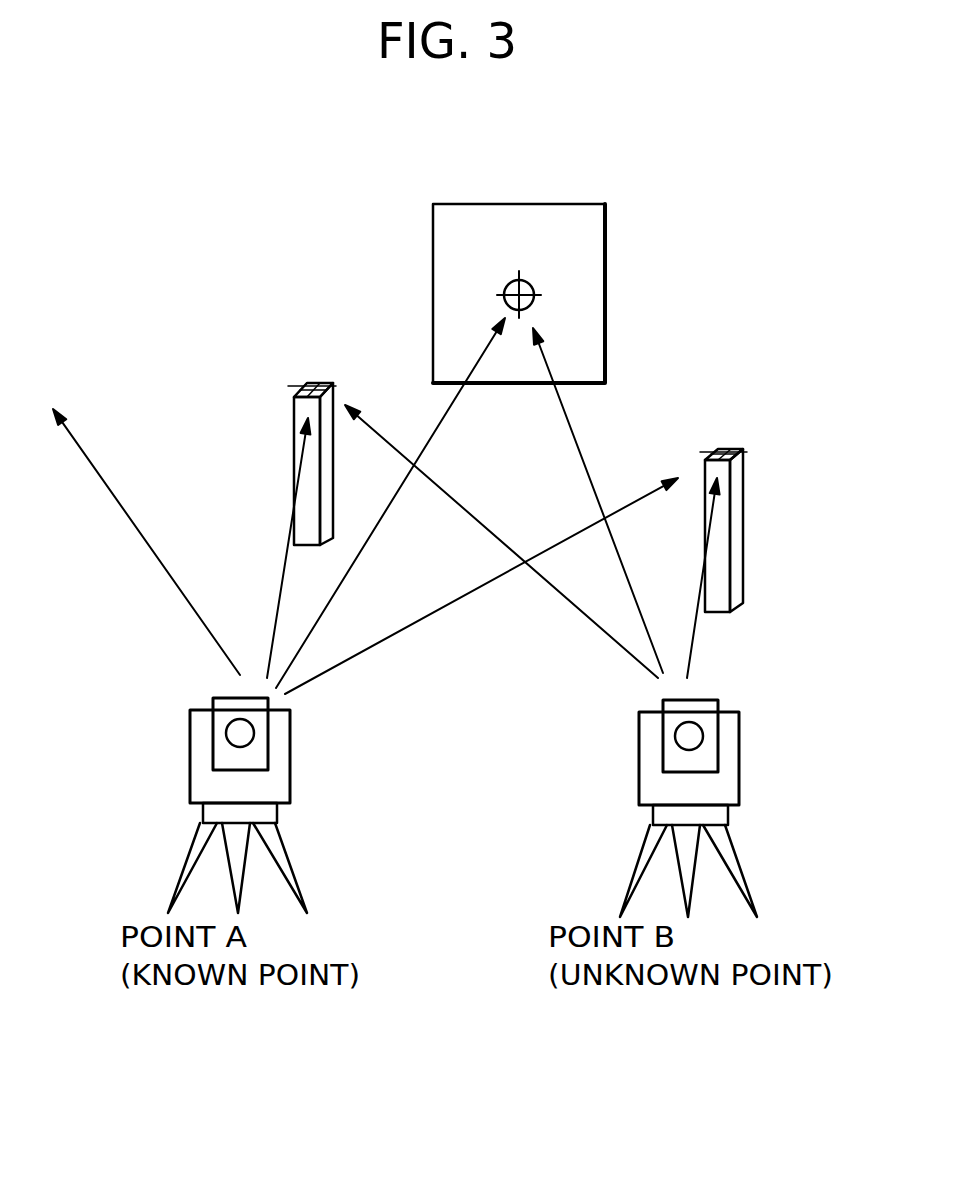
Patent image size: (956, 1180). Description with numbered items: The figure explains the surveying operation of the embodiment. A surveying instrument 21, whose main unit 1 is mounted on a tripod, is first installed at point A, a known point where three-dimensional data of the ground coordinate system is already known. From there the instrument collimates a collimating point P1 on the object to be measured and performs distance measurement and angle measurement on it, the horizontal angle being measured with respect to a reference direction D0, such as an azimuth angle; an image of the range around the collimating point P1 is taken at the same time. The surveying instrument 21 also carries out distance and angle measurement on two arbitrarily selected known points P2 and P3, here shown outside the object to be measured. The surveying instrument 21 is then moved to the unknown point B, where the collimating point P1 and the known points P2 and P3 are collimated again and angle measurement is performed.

The main unit 1 is at (190, 733).
The surveying instrument 21 is at (185, 827).
The collimating point P1 is at (519, 293).
The known point P2 is at (312, 439).
The known point P3 is at (724, 502).
The reference direction D0 is at (135, 521).